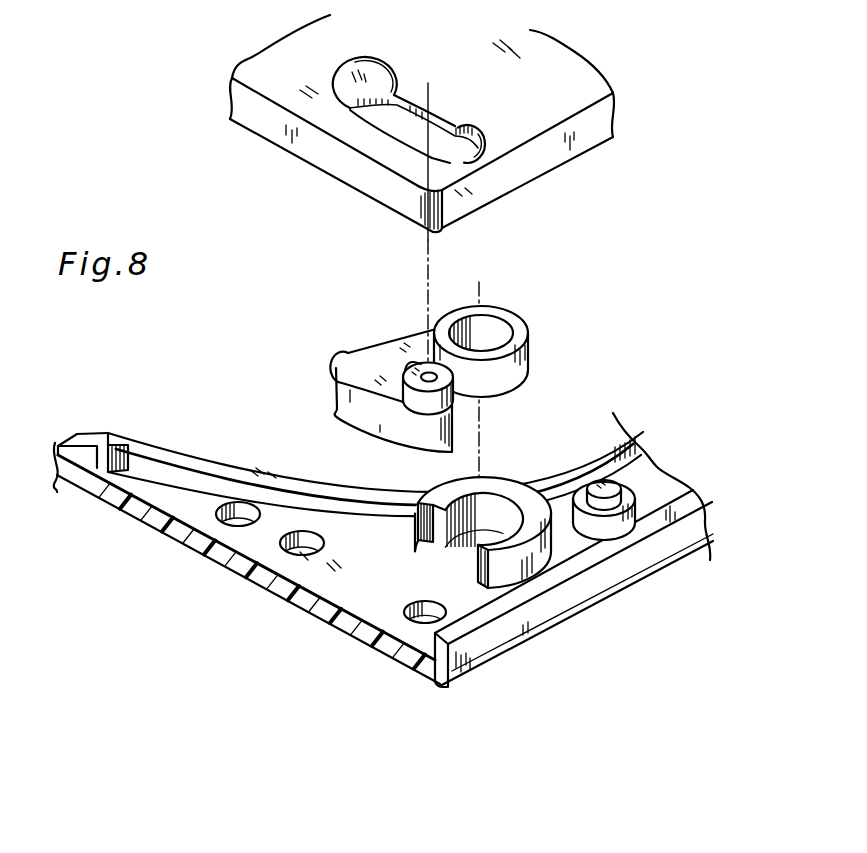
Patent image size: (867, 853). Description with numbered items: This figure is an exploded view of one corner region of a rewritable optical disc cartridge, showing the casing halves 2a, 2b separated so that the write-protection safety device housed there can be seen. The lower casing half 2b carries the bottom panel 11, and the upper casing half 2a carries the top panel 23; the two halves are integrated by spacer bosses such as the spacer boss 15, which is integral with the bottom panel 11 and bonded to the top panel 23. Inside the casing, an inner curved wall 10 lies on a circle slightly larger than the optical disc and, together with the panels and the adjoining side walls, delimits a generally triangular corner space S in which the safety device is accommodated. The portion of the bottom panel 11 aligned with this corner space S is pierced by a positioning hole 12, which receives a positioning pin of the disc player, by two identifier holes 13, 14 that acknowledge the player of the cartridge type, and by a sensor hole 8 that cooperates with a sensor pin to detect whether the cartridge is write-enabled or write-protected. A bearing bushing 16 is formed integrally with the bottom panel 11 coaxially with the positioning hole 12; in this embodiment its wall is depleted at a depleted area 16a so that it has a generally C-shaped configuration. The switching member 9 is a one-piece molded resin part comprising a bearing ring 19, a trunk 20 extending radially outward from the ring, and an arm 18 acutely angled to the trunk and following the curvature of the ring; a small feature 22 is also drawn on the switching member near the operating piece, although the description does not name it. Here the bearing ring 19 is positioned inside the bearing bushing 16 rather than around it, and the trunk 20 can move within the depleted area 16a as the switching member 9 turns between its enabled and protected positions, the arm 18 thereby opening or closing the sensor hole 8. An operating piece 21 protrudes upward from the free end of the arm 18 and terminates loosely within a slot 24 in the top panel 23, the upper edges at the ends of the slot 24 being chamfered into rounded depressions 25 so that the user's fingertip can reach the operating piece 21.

The casing half 2a is at (323, 157).
The casing half 2b is at (518, 633).
The sensor hole 8 is at (405, 622).
The switching member 9 is at (459, 353).
The inner curved wall 10 is at (192, 458).
The bottom panel 11 is at (337, 627).
The positioning hole 12 is at (450, 555).
The identifier hole 13 is at (287, 552).
The identifier hole 14 is at (217, 517).
The spacer boss 15 is at (607, 485).
The bearing bushing 16 is at (487, 571).
The depleted area 16a is at (412, 530).
The arm 18 is at (393, 430).
The bearing ring 19 is at (493, 310).
The trunk 20 is at (390, 350).
The operating piece 21 is at (450, 398).
The lug 22 is at (403, 372).
The top panel 23 is at (597, 78).
The slot 24 is at (407, 110).
The rounded depression 25 is at (355, 75).
The triangular corner space S is at (325, 517).